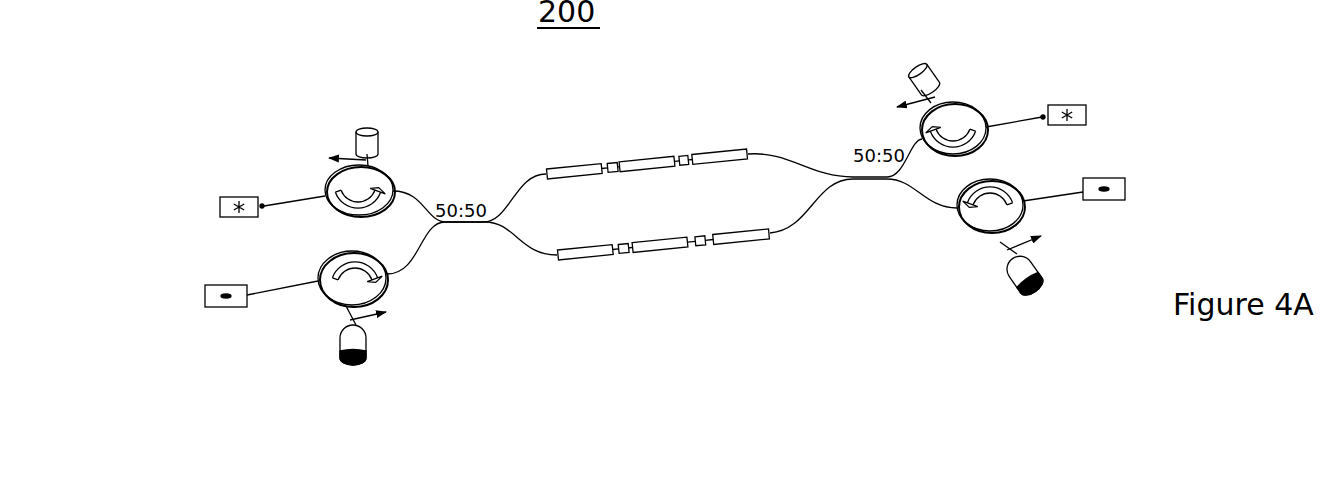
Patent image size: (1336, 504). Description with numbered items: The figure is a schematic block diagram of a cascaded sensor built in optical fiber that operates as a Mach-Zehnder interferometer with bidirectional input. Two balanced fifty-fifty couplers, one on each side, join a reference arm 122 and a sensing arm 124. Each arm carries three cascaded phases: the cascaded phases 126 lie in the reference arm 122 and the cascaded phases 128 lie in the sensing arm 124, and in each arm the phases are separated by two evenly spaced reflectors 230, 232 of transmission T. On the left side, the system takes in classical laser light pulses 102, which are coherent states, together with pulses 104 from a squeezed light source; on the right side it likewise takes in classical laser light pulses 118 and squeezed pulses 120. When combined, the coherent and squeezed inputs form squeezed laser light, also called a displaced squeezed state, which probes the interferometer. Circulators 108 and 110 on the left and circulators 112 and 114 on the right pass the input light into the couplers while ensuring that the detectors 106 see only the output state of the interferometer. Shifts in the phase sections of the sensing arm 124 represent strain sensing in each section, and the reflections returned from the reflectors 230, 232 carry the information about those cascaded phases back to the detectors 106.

The classical laser light pulses 102 is at (230, 195).
The squeezed light pulses 104 is at (227, 298).
The detectors 106 is at (709, 220).
The circulator 108 is at (384, 187).
The circulator 110 is at (337, 294).
The circulator 112 is at (963, 113).
The circulator 114 is at (982, 223).
The classical laser light pulses 118 is at (1079, 100).
The squeezed light pulses 120 is at (1109, 173).
The reference arm 122 is at (797, 143).
The sensing arm 124 is at (530, 258).
The cascaded phases 126 is at (693, 142).
The cascaded phases 128 is at (737, 277).
The evenly spaced reflectors 230 is at (626, 243).
The fiber connector 232 is at (702, 235).